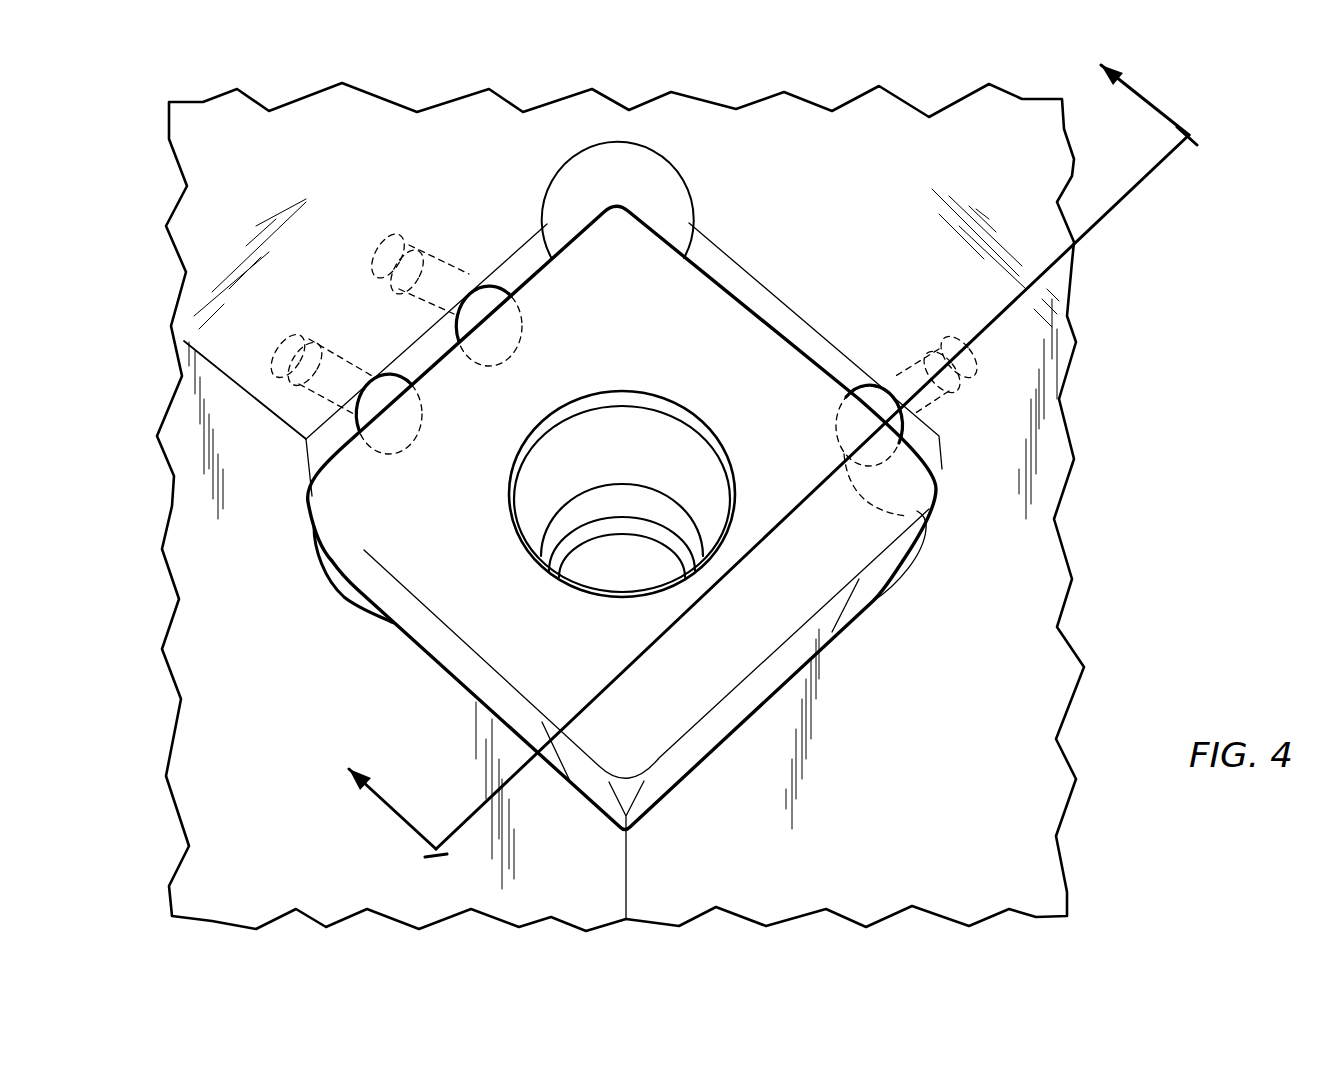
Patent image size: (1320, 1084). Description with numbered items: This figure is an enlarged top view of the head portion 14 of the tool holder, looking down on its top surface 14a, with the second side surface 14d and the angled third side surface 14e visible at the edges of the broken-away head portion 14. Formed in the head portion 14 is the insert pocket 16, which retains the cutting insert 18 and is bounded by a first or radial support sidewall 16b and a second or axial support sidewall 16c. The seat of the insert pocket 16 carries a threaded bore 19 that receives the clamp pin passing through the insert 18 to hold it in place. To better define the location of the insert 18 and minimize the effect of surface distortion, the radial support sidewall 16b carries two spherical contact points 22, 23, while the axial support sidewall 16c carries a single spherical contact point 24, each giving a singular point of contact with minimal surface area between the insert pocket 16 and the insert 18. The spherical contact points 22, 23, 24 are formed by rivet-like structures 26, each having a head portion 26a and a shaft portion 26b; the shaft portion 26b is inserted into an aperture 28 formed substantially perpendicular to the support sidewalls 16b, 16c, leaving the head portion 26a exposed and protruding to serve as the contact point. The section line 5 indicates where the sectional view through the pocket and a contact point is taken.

The section line 5 is at (779, 474).
The head portion 14 is at (222, 402).
The top surface 14a is at (347, 155).
The second side surface 14d is at (944, 847).
The third side surface 14e is at (310, 847).
The insert pocket 16 is at (386, 653).
The first or radial support sidewall 16b is at (323, 450).
The second or axial support sidewall 16c is at (936, 440).
The insert 18 is at (866, 656).
The threaded bore 19 is at (617, 593).
The spherical contact point 22 is at (503, 333).
The spherical contact point 23 is at (505, 440).
The spherical contact point 24 is at (907, 517).
The rivet-like structure 26 is at (483, 262).
The head portion 26a is at (530, 272).
The shaft portion 26b is at (455, 298).
The aperture 28 is at (425, 312).